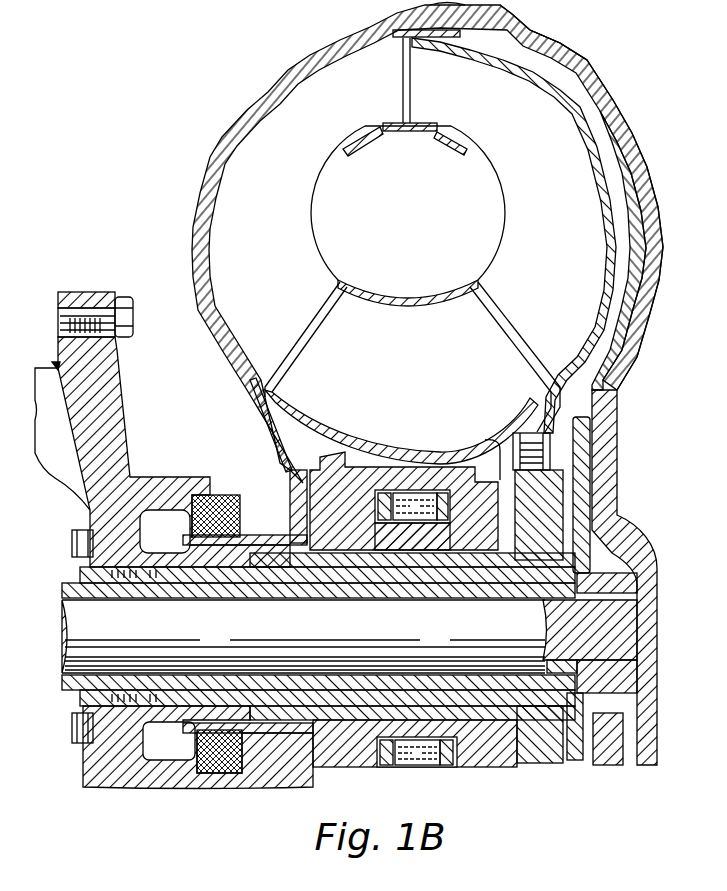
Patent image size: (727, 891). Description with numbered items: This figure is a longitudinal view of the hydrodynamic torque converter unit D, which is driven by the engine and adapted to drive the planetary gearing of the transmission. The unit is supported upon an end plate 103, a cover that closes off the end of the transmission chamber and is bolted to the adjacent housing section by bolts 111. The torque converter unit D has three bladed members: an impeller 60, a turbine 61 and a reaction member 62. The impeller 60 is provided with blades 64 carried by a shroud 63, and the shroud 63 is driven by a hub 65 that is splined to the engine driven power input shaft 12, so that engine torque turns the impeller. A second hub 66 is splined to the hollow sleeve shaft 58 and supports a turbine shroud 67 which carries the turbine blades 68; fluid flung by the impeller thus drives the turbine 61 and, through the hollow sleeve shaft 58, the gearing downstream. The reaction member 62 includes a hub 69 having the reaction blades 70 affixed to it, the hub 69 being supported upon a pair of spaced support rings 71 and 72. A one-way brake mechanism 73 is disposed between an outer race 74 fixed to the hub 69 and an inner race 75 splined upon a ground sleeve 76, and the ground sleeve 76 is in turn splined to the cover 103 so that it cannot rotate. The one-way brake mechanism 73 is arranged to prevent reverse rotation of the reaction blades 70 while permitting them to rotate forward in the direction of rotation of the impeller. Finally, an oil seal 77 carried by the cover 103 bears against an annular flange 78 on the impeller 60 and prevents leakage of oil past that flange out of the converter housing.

The power input shaft 12 is at (80, 650).
The hollow sleeve shaft 58 is at (63, 590).
The impeller 60 is at (212, 157).
The turbine 61 is at (594, 147).
The reaction member 62 is at (417, 292).
The shroud 63 is at (592, 80).
The blades 64 is at (293, 187).
The hub 65 is at (577, 540).
The hub 66 is at (553, 480).
The turbine shroud 67 is at (634, 214).
The turbine blades 68 is at (513, 178).
The hub 69 is at (467, 443).
The reaction blades 70 is at (383, 313).
The support ring 71 is at (503, 480).
The support ring 72 is at (333, 477).
The one-way brake mechanism 73 is at (420, 488).
The outer race 74 is at (395, 495).
The inner race 75 is at (387, 547).
The ground sleeve 76 is at (227, 570).
The oil seal 77 is at (227, 495).
The annular flange 78 is at (273, 535).
The end plate 103 is at (107, 377).
The bolts 111 is at (120, 300).
The hydrodynamic torque converter unit D is at (575, 58).